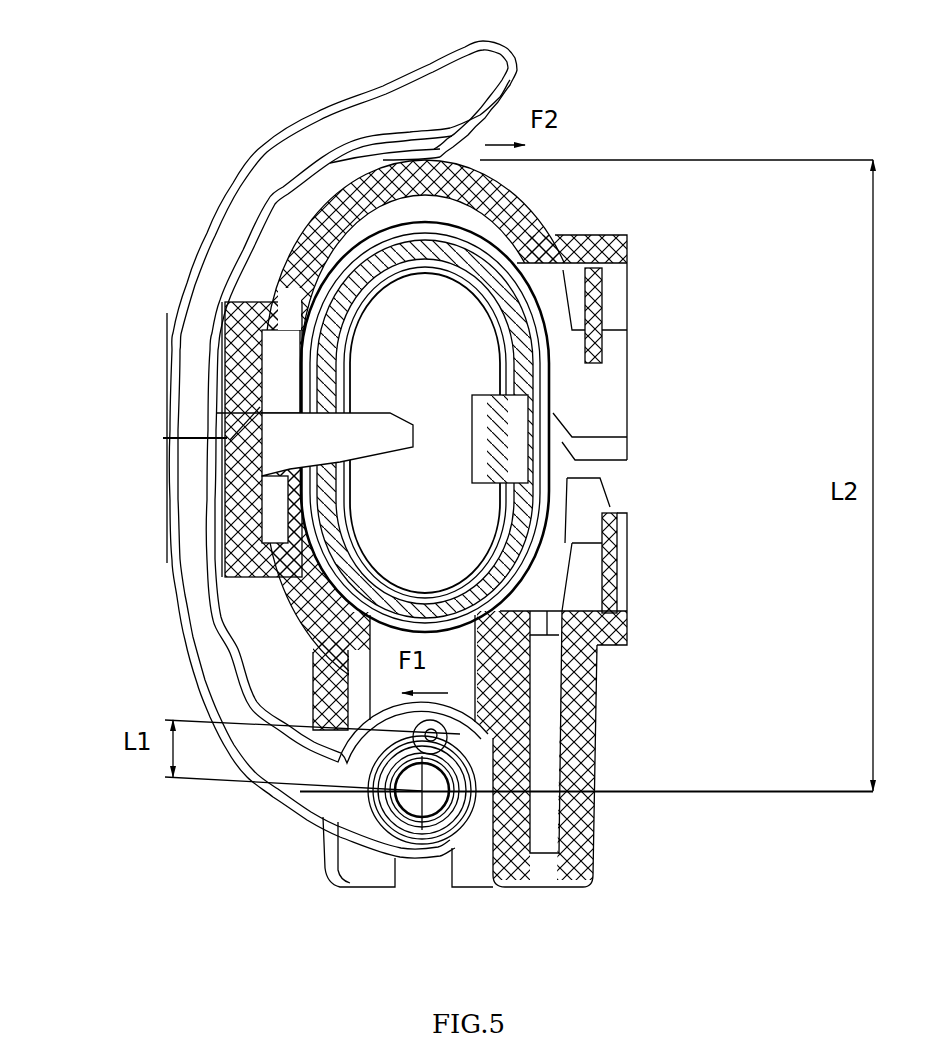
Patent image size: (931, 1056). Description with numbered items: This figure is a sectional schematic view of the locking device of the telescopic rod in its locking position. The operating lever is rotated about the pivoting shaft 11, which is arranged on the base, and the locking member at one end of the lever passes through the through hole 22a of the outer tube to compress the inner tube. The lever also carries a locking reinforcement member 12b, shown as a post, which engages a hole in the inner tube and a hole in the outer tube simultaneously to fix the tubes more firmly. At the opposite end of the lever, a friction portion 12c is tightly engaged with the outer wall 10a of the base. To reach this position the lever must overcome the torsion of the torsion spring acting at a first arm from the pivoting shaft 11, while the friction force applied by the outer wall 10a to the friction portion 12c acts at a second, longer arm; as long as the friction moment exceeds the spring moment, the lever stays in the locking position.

The outer wall 10a is at (427, 160).
The friction portion 12c is at (423, 115).
The locking reinforcement member 12b is at (312, 437).
The through hole 22a is at (500, 612).
The pivoting shaft 11 is at (424, 815).